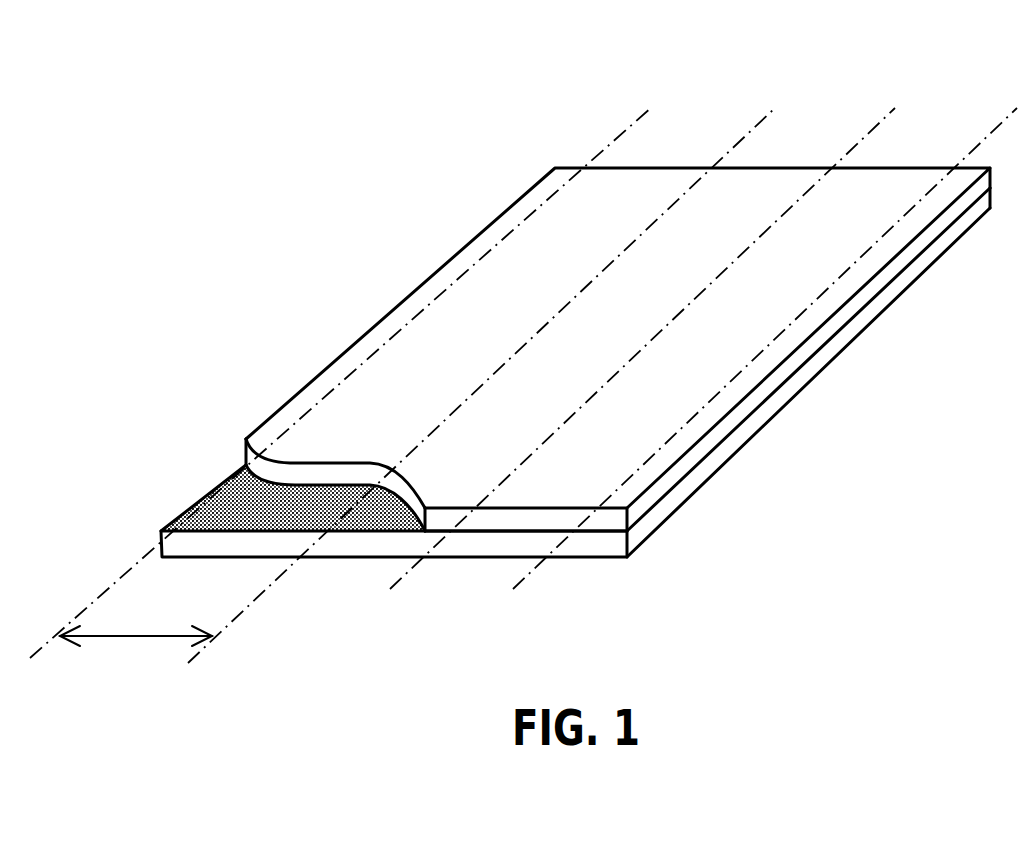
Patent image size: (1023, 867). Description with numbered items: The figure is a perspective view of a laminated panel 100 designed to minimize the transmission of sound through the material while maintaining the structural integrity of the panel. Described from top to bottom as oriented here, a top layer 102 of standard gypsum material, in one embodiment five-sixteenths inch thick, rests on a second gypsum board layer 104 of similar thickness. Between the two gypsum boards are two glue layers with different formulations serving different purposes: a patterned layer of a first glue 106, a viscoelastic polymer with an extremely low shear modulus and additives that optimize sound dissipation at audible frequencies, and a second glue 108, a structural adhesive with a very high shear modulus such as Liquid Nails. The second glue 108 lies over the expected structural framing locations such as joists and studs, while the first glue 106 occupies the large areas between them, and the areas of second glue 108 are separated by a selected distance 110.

The laminated panel 100 is at (362, 198).
The top layer 102 is at (627, 413).
The second gypsum board layer 104 is at (705, 487).
The first glue 106 is at (273, 518).
The second glue 108 is at (195, 517).
The selected distance 110 is at (136, 654).